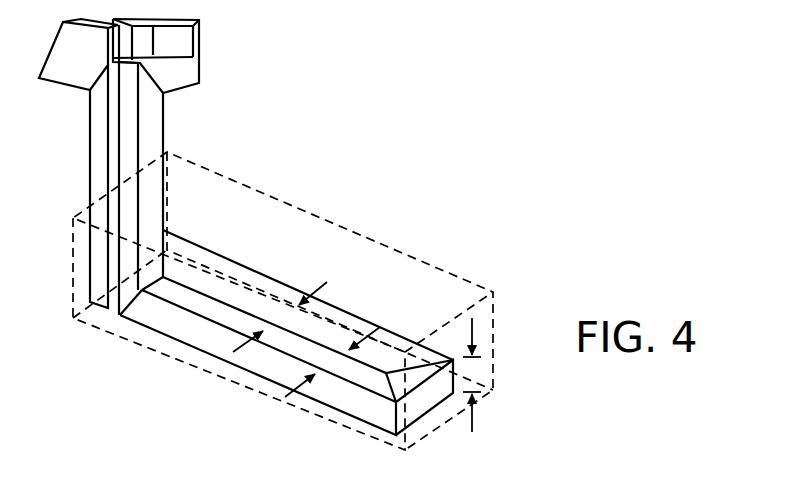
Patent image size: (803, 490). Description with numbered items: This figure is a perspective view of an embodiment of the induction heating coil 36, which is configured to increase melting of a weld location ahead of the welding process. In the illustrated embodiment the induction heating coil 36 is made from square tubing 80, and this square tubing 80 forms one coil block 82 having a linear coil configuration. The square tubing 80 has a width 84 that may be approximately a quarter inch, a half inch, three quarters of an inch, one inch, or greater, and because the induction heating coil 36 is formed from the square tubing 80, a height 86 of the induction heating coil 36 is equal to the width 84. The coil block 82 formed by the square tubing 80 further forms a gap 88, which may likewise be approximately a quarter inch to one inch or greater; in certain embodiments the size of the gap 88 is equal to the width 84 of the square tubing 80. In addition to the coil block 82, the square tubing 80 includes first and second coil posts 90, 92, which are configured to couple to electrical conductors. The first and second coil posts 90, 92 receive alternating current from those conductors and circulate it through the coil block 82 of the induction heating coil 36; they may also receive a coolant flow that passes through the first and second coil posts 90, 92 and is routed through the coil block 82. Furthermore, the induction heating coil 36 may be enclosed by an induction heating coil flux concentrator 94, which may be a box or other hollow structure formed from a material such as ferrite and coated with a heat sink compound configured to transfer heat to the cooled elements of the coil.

The induction heating coil 36 is at (478, 221).
The square tubing 80 is at (200, 337).
The coil block 82 is at (235, 377).
The width 84 is at (338, 363).
The height 86 is at (473, 373).
The gap 88 is at (275, 318).
The first coil post 90 is at (98, 155).
The second coil post 92 is at (150, 128).
The induction heating coil flux concentrator 94 is at (265, 192).